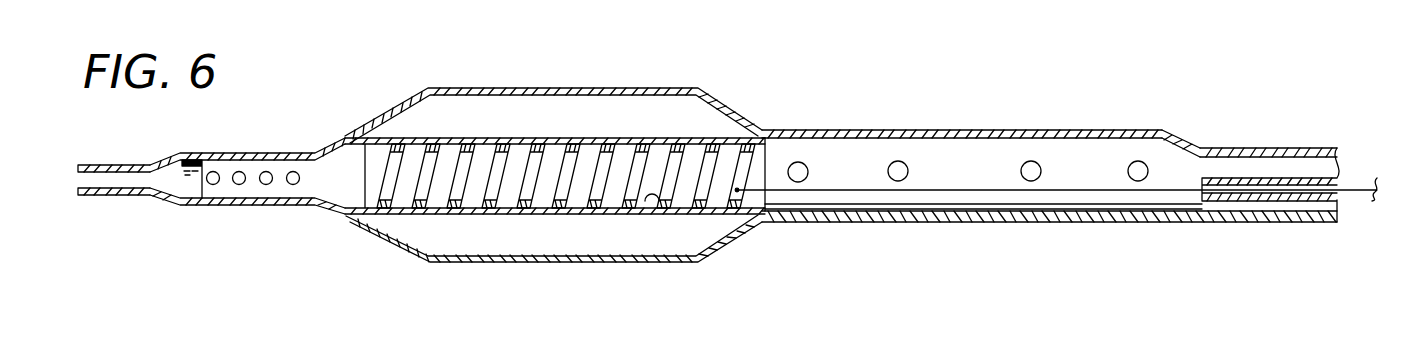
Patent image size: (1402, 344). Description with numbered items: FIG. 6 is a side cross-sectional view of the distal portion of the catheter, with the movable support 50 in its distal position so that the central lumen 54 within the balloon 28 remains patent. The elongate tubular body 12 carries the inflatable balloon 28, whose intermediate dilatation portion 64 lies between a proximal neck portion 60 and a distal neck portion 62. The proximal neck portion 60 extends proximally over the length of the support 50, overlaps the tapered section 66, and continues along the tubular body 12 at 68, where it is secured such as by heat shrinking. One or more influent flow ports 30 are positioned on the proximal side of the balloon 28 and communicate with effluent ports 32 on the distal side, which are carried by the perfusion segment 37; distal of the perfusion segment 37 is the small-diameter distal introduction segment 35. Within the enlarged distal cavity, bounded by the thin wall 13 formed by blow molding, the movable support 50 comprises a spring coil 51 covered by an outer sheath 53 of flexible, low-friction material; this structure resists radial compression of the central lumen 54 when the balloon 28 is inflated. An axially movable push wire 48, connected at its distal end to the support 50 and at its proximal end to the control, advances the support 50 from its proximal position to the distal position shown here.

The tubular body 12 is at (1317, 167).
The wall 13 is at (440, 139).
The balloon 28 is at (605, 88).
The influent flow ports 30 is at (1031, 172).
The effluent ports 32 is at (268, 170).
The distal introduction segment 35 is at (82, 195).
The perfusion segment 37 is at (280, 203).
The push wire 48 is at (1352, 190).
The movable support 50 is at (410, 183).
The spring coil 51 is at (497, 176).
The outer sheath 53 is at (668, 204).
The central lumen 54 is at (766, 165).
The proximal neck portion 60 is at (831, 243).
The distal neck portion 62 is at (203, 176).
The intermediate dilatation portion 64 is at (556, 78).
The tapered section 66 is at (1187, 137).
The extension of proximal neck along tubular body 68 is at (1245, 147).